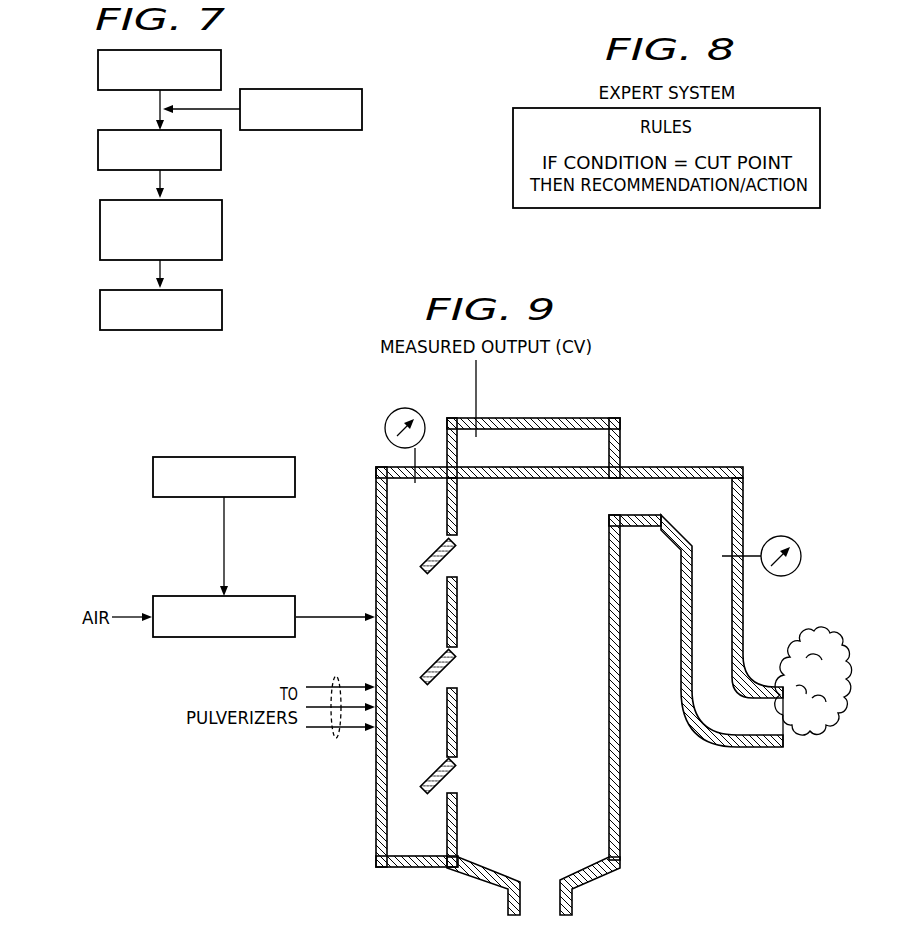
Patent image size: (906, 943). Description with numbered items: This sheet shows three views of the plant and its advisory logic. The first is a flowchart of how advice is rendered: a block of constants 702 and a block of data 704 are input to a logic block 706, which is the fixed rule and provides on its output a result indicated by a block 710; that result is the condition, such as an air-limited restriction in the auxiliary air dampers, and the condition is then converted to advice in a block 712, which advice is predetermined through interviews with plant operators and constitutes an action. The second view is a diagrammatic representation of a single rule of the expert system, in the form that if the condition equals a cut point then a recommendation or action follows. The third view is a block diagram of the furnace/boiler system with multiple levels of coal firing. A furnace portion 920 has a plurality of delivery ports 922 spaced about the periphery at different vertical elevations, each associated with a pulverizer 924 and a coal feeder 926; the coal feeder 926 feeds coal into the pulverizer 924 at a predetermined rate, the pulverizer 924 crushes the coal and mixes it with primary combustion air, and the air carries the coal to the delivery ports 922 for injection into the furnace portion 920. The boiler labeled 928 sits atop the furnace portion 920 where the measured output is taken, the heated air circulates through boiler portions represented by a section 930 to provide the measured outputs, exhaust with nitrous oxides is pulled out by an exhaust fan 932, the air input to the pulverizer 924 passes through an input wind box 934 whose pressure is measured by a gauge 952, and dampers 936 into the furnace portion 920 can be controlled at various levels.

In FIG. 7, the constants block 702 is at (98, 70).
In FIG. 7, the data block 704 is at (363, 108).
In FIG. 7, the logic block 706 is at (98, 149).
In FIG. 7, the result block 710 is at (100, 230).
In FIG. 7, the advice block 712 is at (100, 308).
In FIG. 9, the furnace portion 920 is at (611, 800).
In FIG. 9, the delivery ports 922 is at (345, 615).
In FIG. 9, the pulverizer 924 is at (192, 596).
In FIG. 9, the coal feeder 926 is at (223, 456).
In FIG. 9, the boiler 928 is at (603, 443).
In FIG. 9, the section 930 is at (796, 571).
In FIG. 9, the exhaust fan 932 is at (799, 735).
In FIG. 9, the input wind box 934 is at (392, 817).
In FIG. 9, the dampers 936 is at (444, 561).
In FIG. 9, the gauge 952 is at (386, 428).